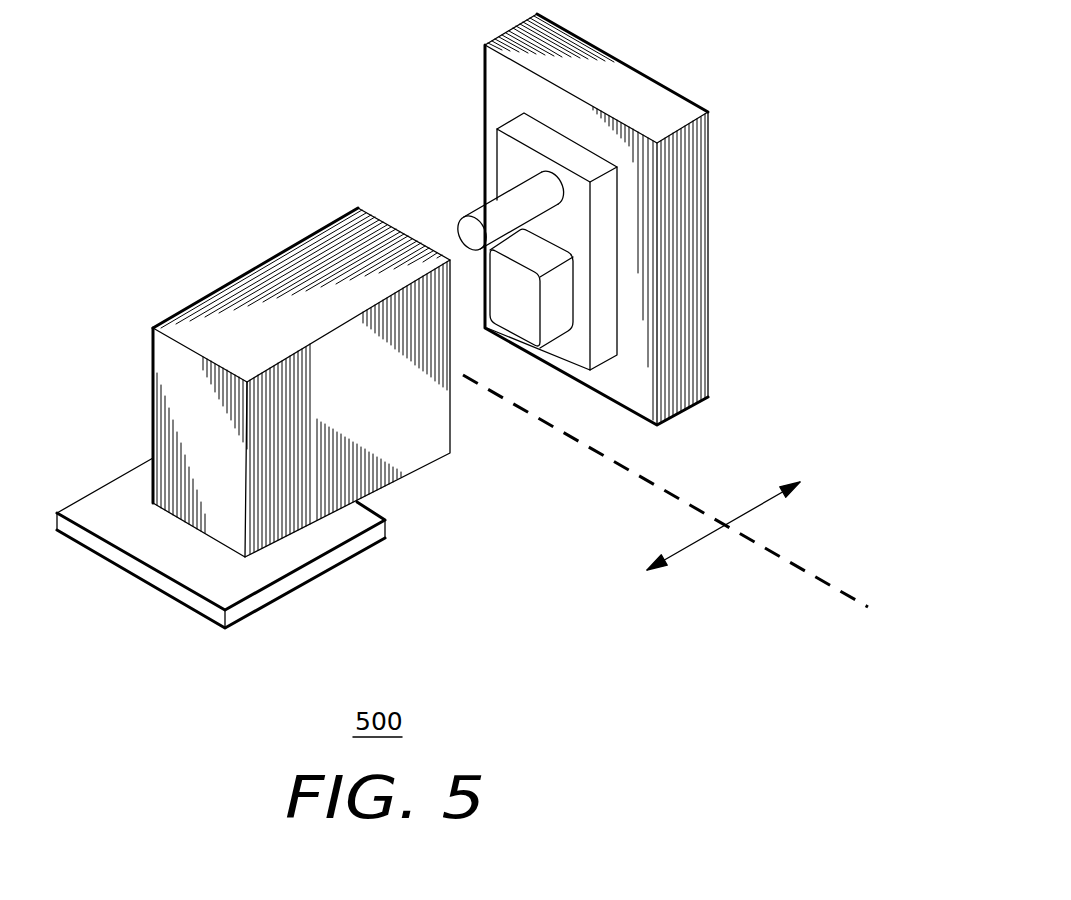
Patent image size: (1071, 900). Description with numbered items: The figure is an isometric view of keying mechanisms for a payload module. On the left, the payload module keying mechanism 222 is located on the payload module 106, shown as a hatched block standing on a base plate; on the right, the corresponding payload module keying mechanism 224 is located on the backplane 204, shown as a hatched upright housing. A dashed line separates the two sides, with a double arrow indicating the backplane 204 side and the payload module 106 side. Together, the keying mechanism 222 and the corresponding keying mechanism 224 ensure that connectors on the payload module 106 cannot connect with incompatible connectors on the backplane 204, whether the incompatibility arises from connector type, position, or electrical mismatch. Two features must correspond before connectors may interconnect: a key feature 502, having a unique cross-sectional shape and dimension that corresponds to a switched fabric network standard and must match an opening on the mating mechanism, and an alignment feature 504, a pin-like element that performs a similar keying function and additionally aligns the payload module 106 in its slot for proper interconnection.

The payload module 106 is at (522, 613).
The backplane 204 is at (863, 457).
The payload module keying mechanism 222 is at (247, 292).
The corresponding payload module keying mechanism 224 is at (497, 80).
The key feature 502 is at (525, 315).
The alignment feature 504 is at (470, 230).